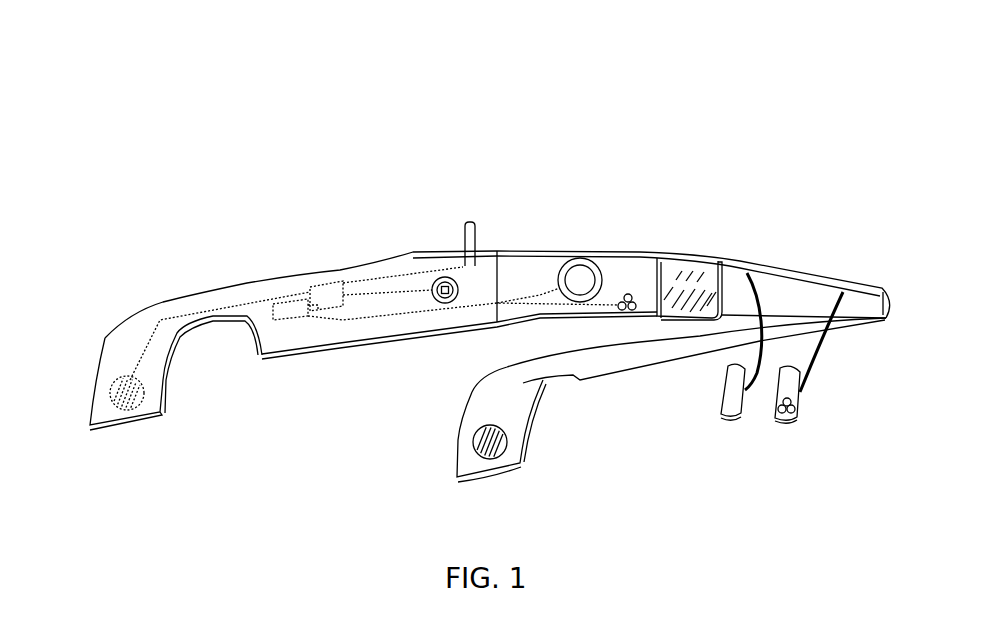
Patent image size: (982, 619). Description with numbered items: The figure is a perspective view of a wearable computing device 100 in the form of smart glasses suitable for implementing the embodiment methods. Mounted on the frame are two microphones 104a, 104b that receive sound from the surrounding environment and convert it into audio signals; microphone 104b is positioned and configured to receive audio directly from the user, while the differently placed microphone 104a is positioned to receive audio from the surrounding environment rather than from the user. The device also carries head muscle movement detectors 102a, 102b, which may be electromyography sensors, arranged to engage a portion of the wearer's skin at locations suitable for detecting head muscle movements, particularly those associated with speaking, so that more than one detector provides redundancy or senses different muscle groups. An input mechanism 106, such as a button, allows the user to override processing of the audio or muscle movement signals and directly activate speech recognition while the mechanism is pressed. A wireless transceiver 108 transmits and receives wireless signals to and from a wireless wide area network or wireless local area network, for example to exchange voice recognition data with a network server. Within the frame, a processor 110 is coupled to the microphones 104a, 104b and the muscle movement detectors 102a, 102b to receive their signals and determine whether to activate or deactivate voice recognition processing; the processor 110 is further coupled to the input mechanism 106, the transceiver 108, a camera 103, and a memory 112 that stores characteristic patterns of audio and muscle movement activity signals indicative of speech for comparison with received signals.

The wearable computing device 100 is at (258, 72).
The head muscle movement detector 102a is at (115, 383).
The head muscle movement detector 102b is at (480, 436).
The camera 103 is at (580, 280).
The microphone 104a is at (630, 294).
The microphone 104b is at (788, 413).
The input mechanism 106 is at (443, 277).
The wireless transceiver 108 is at (467, 223).
The processor 110 is at (320, 290).
The memory 112 is at (290, 318).